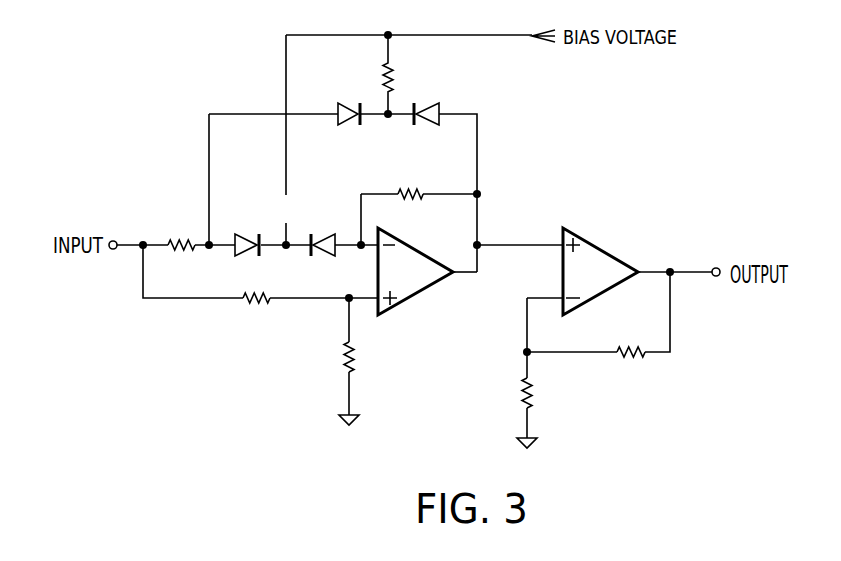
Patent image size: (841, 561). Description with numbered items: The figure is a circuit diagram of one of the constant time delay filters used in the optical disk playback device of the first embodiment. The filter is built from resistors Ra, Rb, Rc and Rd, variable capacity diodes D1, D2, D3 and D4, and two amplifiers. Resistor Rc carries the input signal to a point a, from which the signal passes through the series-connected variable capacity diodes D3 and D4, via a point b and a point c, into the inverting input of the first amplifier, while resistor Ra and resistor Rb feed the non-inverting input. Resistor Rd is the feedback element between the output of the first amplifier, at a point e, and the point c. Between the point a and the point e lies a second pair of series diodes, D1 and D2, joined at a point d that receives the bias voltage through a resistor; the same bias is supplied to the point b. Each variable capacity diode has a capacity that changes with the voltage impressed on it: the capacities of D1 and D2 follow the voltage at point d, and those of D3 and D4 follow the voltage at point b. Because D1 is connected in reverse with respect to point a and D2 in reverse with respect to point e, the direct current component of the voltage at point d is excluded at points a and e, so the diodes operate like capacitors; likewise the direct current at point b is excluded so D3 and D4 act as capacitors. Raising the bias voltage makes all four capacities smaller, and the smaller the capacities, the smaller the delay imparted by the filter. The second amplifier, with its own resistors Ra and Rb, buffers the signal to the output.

The variable capacity diode D1 is at (351, 129).
The variable capacity diode D2 is at (428, 129).
The variable capacity diode D3 is at (247, 231).
The variable capacity diode D4 is at (322, 230).
The resistor Rc is at (179, 232).
The resistor Ra is at (444, 312).
The resistor Rb is at (421, 375).
The resistor Rd is at (411, 181).
The point a is at (209, 255).
The point b is at (288, 257).
The point c is at (362, 257).
The point d is at (389, 125).
The point e is at (482, 236).